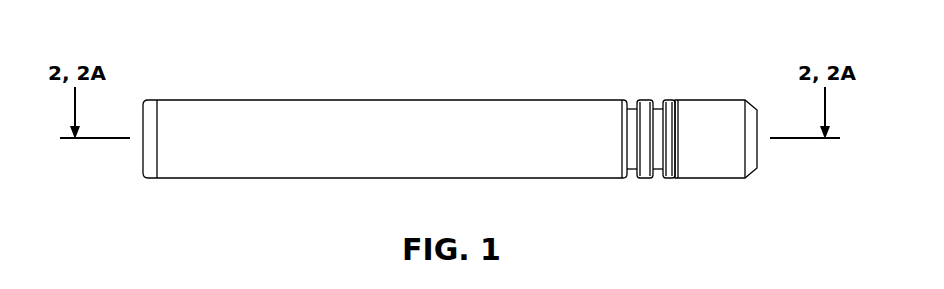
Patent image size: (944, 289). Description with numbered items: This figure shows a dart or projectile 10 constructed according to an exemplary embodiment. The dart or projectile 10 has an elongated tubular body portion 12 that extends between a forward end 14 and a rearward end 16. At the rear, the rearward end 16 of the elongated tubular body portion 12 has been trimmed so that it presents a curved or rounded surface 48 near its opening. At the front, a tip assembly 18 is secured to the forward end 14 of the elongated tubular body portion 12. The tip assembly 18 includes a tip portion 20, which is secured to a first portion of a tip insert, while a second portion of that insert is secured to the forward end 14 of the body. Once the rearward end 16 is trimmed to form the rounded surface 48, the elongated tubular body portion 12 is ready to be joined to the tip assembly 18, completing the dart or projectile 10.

The dart or projectile 10 is at (459, 85).
The elongated tubular body portion 12 is at (298, 120).
The forward end 14 is at (643, 100).
The rearward end 16 is at (144, 124).
The tip assembly 18 is at (698, 84).
The tip portion 20 is at (733, 113).
The curved or rounded surface 48 is at (157, 100).